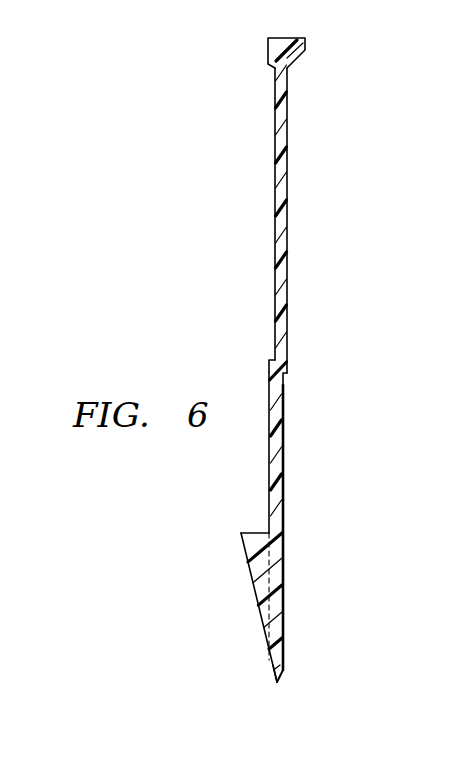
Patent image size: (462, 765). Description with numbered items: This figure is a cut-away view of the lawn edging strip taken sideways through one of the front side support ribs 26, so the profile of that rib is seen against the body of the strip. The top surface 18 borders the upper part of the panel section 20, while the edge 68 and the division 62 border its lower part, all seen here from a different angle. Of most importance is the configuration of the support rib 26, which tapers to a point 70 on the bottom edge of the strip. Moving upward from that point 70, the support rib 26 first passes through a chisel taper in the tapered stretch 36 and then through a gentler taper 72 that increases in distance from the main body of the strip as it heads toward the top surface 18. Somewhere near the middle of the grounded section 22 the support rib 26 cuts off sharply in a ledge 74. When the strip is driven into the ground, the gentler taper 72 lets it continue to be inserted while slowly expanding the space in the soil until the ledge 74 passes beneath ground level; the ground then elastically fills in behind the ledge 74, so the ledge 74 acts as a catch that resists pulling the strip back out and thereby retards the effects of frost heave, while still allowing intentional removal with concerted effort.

The top surface 18 is at (268, 40).
The panel section 20 is at (264, 160).
The grounded section 22 is at (309, 508).
The support rib 26 is at (233, 575).
The tapered stretch 36 is at (272, 666).
The division 62 is at (285, 375).
The edge 68 is at (271, 360).
The point 70 is at (278, 682).
The gentler taper 72 is at (258, 614).
The ledge 74 is at (256, 532).